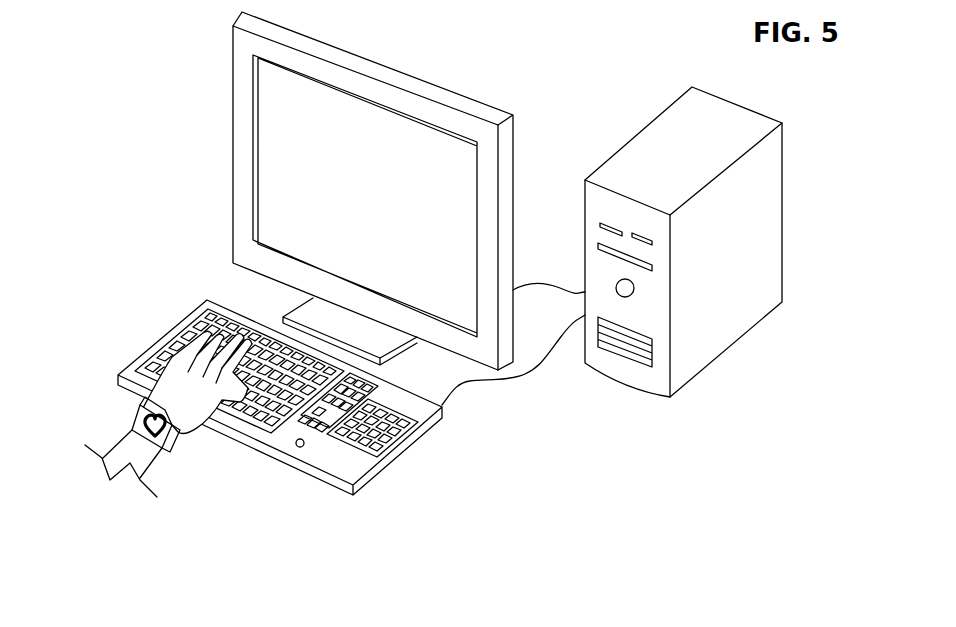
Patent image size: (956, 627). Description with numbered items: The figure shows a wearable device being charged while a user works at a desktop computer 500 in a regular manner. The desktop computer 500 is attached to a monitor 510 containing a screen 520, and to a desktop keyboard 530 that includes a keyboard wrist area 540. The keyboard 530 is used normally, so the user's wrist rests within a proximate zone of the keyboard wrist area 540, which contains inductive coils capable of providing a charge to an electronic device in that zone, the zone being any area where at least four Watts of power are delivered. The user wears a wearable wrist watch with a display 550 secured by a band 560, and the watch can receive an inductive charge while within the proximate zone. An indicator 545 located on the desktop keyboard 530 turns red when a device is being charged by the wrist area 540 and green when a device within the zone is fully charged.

The desktop computer 500 is at (642, 124).
The monitor 510 is at (233, 35).
The screen 520 is at (278, 218).
The desktop keyboard 530 is at (443, 418).
The keyboard wrist area 540 is at (337, 453).
The indicator 545 is at (302, 447).
The wearable wrist watch with a display 550 is at (133, 416).
The band 560 is at (175, 432).